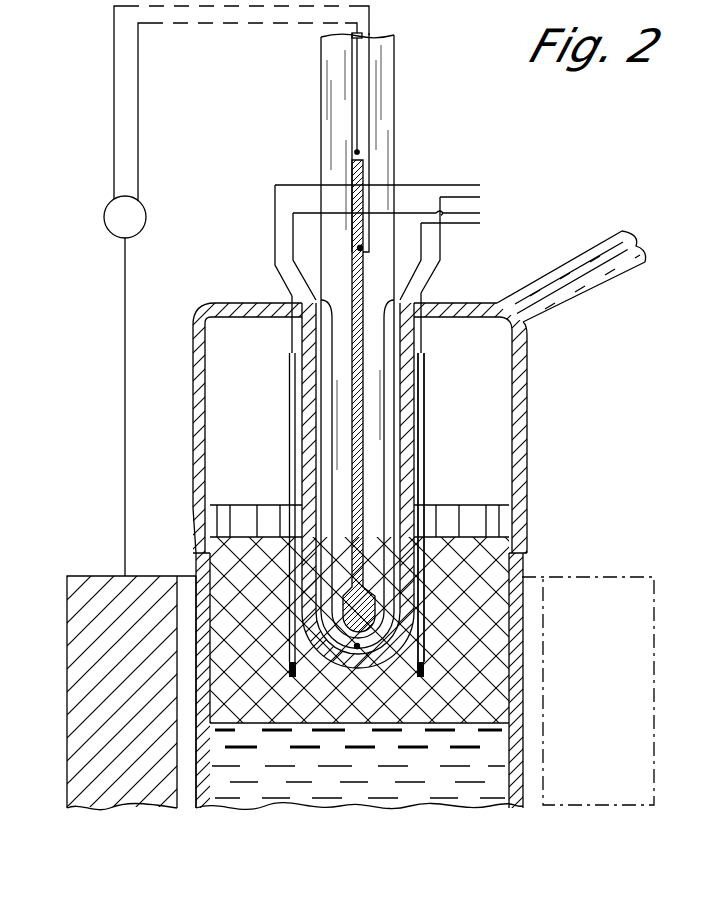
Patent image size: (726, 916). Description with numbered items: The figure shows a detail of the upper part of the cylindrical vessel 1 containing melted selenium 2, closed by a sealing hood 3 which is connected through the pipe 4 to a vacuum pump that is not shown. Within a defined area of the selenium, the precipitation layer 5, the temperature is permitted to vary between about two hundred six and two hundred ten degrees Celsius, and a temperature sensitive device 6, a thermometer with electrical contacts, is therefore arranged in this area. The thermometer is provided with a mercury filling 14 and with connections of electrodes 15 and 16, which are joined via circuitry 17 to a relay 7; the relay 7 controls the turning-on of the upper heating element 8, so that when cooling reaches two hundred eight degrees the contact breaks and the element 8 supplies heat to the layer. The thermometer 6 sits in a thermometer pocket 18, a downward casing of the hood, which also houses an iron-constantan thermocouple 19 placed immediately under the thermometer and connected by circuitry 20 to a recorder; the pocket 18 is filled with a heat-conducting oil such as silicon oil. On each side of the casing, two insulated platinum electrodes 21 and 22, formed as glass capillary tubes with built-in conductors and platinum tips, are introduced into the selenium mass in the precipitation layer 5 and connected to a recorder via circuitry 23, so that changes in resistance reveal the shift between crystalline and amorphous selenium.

The cylindrical vessel 1 is at (517, 637).
The melted selenium 2 is at (495, 748).
The sealing hood 3 is at (522, 423).
The pipe 4 is at (627, 243).
The precipitation layer 5 is at (497, 677).
The temperature sensitive device 6 is at (389, 141).
The relay 7 is at (146, 211).
The heating element 8 is at (80, 595).
The mercury filling 14 is at (358, 176).
The electrode connection 15 is at (357, 120).
The electrode connection 16 is at (358, 248).
The circuitry 17 is at (371, 30).
The thermometer pocket 18 is at (407, 430).
The thermocouple 19 is at (357, 646).
The circuitry 20 is at (404, 216).
The platinum electrode 21 is at (290, 677).
The platinum electrode 22 is at (420, 677).
The circuitry 23 is at (395, 186).